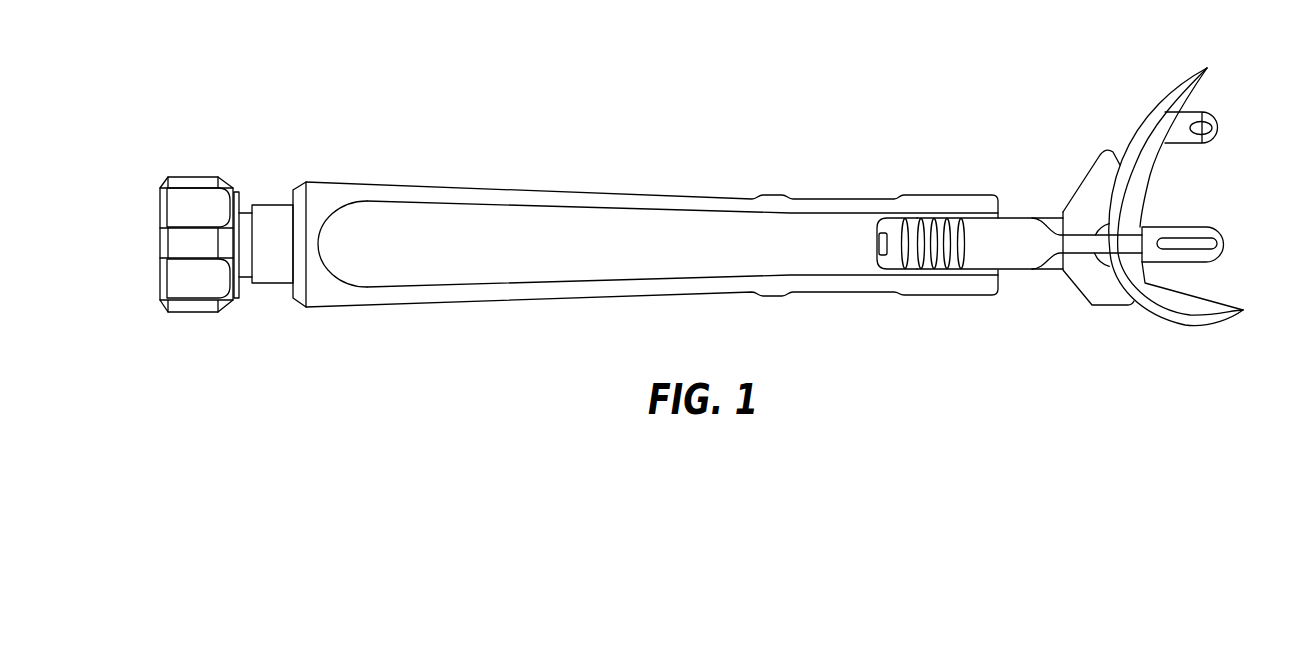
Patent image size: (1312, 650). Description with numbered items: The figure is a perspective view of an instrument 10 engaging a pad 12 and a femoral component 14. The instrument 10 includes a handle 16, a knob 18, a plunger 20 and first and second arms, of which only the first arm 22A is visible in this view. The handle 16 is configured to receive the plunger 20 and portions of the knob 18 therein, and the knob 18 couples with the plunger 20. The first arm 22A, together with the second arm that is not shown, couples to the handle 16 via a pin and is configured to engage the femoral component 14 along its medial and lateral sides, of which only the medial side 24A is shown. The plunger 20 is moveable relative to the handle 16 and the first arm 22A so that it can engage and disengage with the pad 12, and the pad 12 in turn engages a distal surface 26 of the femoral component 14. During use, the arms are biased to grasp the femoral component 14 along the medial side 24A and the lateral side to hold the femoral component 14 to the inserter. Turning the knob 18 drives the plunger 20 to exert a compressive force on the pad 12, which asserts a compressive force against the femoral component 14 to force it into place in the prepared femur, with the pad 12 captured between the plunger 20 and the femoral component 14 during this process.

The instrument 10 is at (328, 88).
The pad 12 is at (1089, 153).
The femoral component 14 is at (1164, 77).
The handle 16 is at (578, 188).
The knob 18 is at (197, 177).
The plunger 20 is at (1038, 216).
The first arm 22A is at (1000, 255).
The medial side 24A is at (1131, 213).
The distal surface 26 is at (1147, 112).